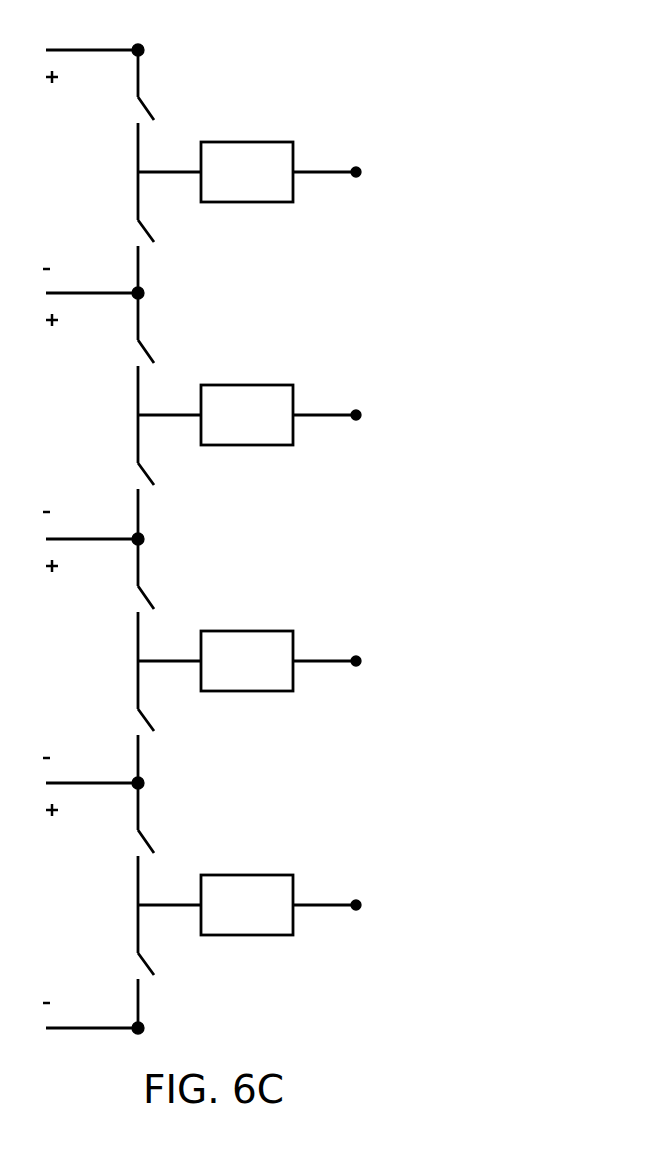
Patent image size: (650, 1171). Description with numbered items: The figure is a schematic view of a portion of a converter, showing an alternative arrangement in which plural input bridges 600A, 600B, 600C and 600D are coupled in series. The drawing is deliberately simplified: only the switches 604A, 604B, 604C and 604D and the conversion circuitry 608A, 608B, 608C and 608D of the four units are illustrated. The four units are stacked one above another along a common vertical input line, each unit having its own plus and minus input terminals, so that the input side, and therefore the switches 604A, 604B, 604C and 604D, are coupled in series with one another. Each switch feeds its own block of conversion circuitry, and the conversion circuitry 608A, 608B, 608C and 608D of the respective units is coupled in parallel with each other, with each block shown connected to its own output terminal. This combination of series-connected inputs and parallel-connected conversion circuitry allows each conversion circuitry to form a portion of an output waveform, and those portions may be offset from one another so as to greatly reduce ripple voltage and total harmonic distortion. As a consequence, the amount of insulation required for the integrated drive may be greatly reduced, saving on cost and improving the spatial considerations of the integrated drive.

The input bridge 600A is at (248, 142).
The input bridge 600B is at (248, 385).
The input bridge 600C is at (248, 631).
The input bridge 600D is at (257, 875).
The switch 604A is at (158, 100).
The switch 604B is at (158, 343).
The switch 604C is at (158, 589).
The switch 604D is at (158, 833).
The conversion circuitry 608A is at (267, 156).
The conversion circuitry 608B is at (267, 400).
The conversion circuitry 608C is at (267, 646).
The conversion circuitry 608D is at (268, 891).